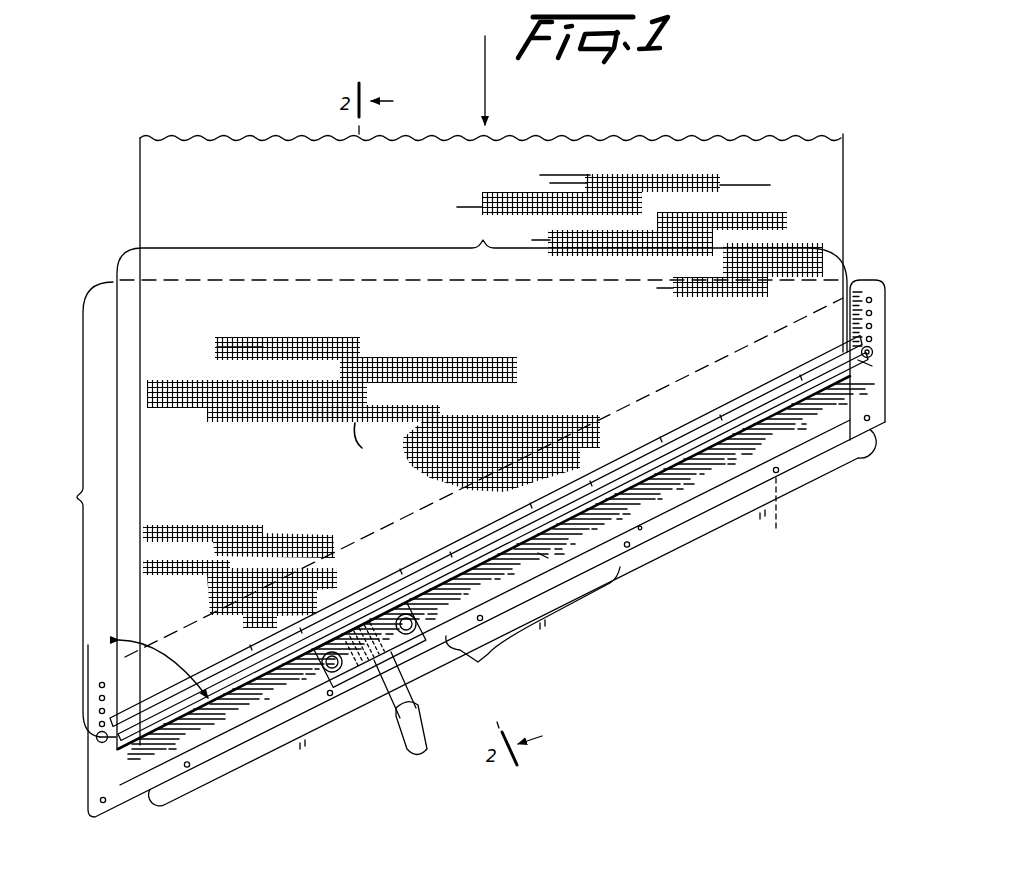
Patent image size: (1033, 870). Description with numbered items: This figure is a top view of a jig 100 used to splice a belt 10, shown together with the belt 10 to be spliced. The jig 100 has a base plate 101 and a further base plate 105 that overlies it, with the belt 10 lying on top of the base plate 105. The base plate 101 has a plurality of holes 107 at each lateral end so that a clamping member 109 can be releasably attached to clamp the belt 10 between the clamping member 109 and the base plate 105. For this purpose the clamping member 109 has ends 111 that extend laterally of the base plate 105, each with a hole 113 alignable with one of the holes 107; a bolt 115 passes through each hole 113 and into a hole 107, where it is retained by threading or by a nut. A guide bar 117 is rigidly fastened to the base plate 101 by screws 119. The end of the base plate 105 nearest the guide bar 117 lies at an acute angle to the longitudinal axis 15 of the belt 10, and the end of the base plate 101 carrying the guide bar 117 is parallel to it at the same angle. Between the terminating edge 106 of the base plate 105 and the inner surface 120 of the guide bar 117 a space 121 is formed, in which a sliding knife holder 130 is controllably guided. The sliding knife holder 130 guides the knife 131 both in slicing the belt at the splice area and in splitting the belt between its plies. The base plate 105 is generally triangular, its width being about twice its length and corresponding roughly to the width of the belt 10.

The belt 10 is at (672, 152).
The longitudinal axis 15 is at (488, 89).
The jig 100 is at (636, 646).
The base plate 101 is at (872, 422).
The base plate 105 is at (848, 281).
The terminating edge 106 is at (537, 554).
The holes 107 is at (99, 697).
The clamping member 109 is at (618, 463).
The ends 111 is at (113, 740).
The hole 113 is at (873, 357).
The bolt 115 is at (97, 741).
The guide bar 117 is at (735, 494).
The screws 119 is at (782, 511).
The inner surface 120 is at (641, 530).
The space 121 is at (677, 479).
The sliding knife holder 130 is at (416, 645).
The knife 131 is at (397, 731).